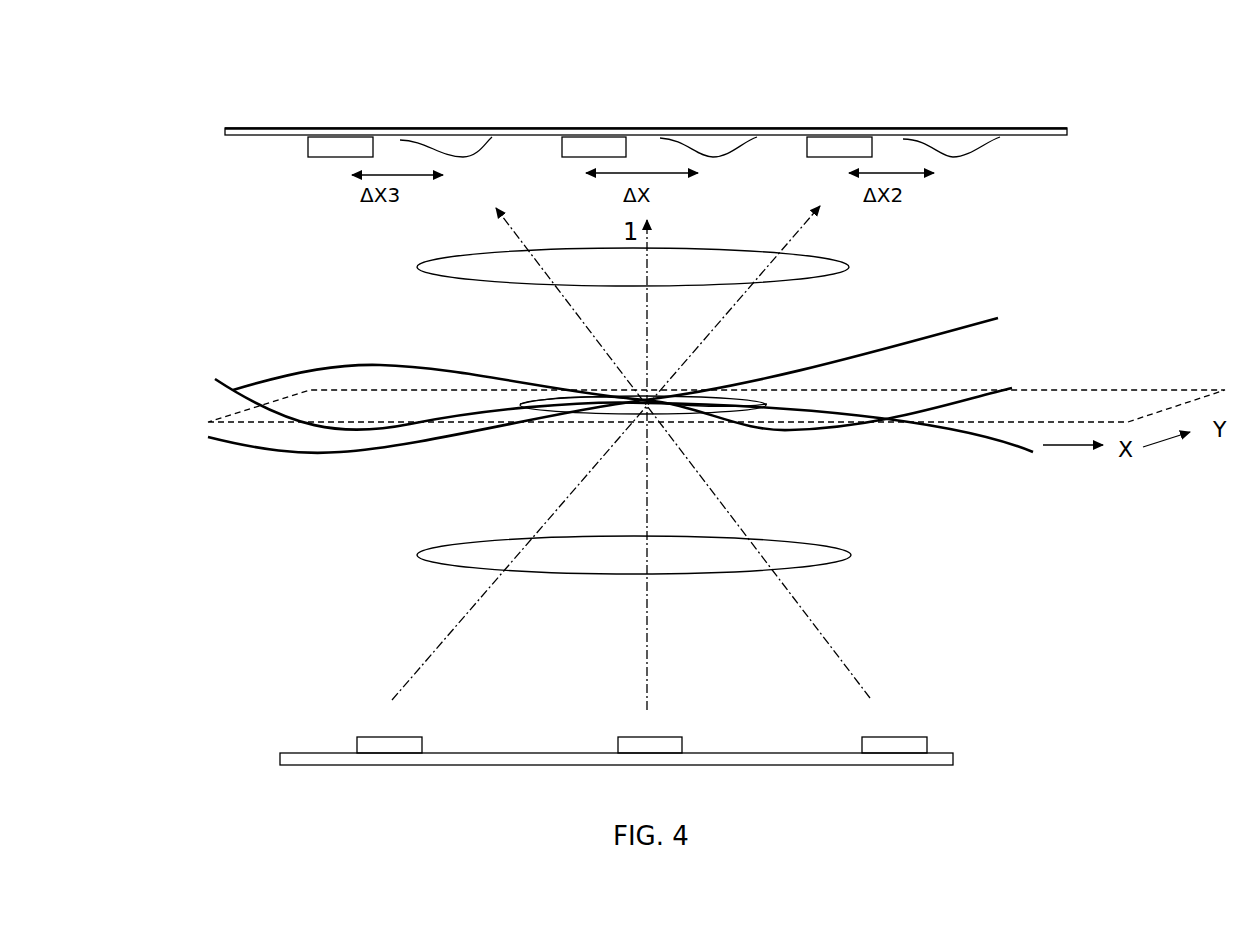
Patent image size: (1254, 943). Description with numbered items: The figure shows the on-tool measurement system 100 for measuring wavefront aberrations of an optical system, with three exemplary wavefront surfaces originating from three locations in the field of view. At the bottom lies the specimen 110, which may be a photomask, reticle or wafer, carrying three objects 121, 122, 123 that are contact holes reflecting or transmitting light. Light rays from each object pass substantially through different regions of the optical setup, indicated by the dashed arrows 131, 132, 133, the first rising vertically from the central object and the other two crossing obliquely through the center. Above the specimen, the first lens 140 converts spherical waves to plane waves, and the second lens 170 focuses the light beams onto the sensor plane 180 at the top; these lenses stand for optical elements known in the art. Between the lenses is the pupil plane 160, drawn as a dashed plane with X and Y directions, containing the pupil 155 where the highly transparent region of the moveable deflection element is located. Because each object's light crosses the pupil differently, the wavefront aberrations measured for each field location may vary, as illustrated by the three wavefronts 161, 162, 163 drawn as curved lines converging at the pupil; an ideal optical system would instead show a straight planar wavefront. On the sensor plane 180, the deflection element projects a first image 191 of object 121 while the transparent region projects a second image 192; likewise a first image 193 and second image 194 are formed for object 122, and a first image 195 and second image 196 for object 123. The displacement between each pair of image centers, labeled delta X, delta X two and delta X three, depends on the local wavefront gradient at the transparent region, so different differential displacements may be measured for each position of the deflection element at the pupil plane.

The on-tool measurement system 100 is at (1030, 114).
The specimen 110 is at (282, 763).
The object 121 is at (617, 747).
The object 122 is at (870, 745).
The object 123 is at (365, 745).
The beam of light 131 is at (652, 663).
The dashed arrow 132 is at (855, 675).
The dashed arrow 133 is at (428, 659).
The first lens 140 is at (420, 556).
The pupil 155 is at (737, 396).
The pupil plane 160 is at (212, 422).
The wavefront 161 is at (1012, 392).
The wavefront 162 is at (998, 318).
The wavefront 163 is at (1033, 452).
The second lens 170 is at (418, 268).
The sensor plane 180 is at (227, 128).
The first image 191 is at (568, 136).
The second image 192 is at (733, 147).
The first image 193 is at (312, 136).
The second image 194 is at (477, 147).
The first image 195 is at (818, 134).
The second image 196 is at (977, 147).